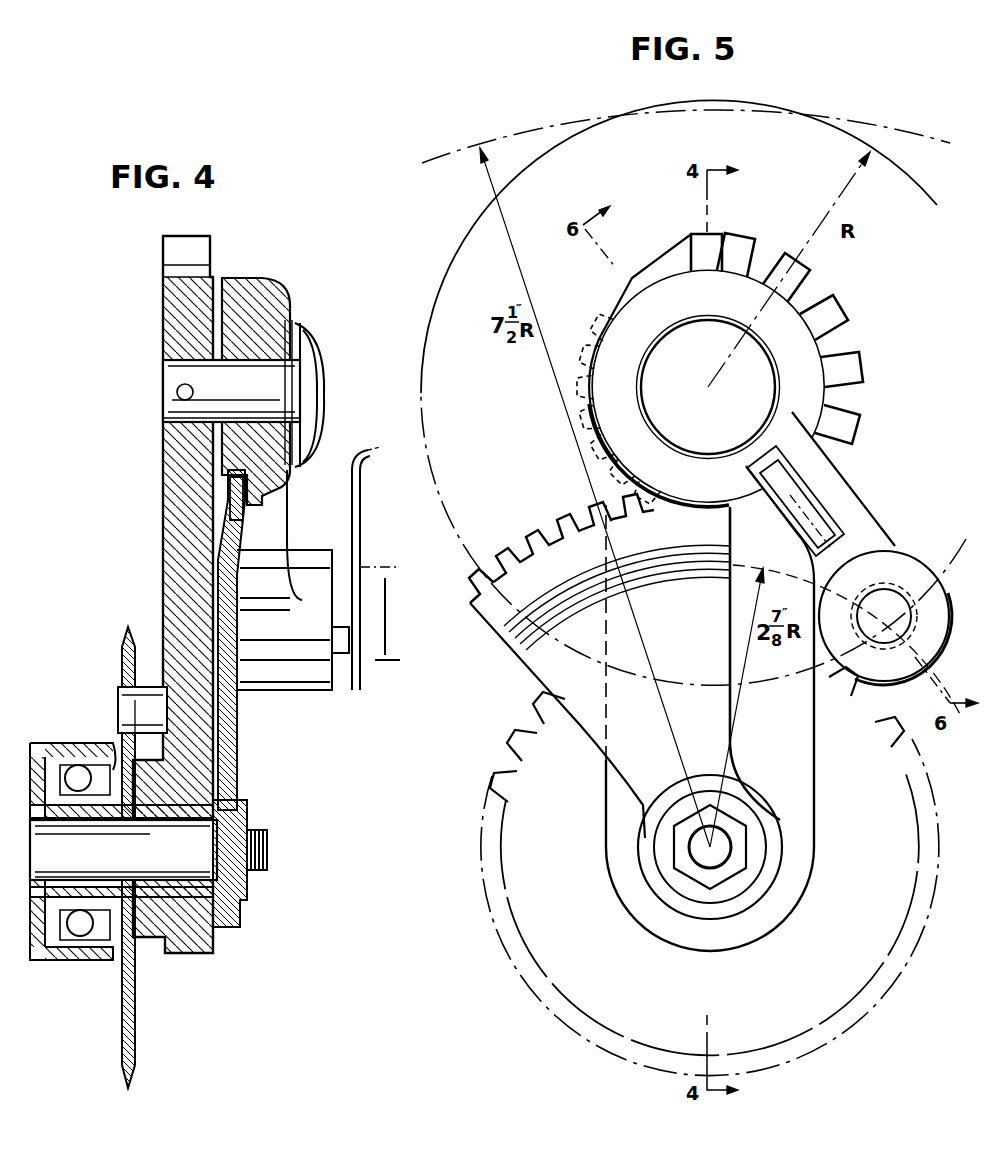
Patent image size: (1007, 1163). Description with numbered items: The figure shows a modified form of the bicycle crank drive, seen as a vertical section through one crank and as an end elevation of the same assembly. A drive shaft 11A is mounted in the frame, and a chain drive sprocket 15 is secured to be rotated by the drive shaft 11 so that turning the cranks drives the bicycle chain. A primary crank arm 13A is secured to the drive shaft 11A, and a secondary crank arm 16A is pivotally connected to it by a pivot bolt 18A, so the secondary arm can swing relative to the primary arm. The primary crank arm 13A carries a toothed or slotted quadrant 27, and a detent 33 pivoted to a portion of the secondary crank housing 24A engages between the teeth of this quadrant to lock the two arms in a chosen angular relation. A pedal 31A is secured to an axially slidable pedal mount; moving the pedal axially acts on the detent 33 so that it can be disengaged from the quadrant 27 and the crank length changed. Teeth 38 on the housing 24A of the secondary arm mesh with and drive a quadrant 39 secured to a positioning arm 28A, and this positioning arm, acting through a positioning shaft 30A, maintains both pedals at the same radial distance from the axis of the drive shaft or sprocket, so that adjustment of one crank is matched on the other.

In FIG. 4, the drive shaft 11 is at (45, 745).
In FIG. 4, the drive shaft 11A is at (52, 897).
In FIG. 4, the primary crank arm 13A is at (163, 521).
In FIG. 5, the primary crank arm 13A is at (810, 769).
In FIG. 4, the chain drive sprocket 15 is at (135, 1013).
In FIG. 4, the secondary crank arm 16A is at (276, 538).
In FIG. 5, the secondary crank arm 16A is at (822, 470).
In FIG. 4, the pivot bolt 18A is at (288, 374).
In FIG. 5, the pivot bolt 18A is at (716, 371).
In FIG. 5, the secondary crank housing 24A is at (603, 350).
In FIG. 5, the toothed or slotted quadrant 27 is at (850, 348).
In FIG. 4, the positioning arm 28A is at (240, 728).
In FIG. 5, the positioning arm 28A is at (727, 725).
In FIG. 4, the positioning shaft 30A is at (195, 832).
In FIG. 4, the pedal 31A is at (388, 670).
In FIG. 5, the detent 33 is at (815, 521).
In FIG. 5, the teeth 38 is at (597, 423).
In FIG. 4, the quadrant 39 is at (237, 490).
In FIG. 5, the quadrant 39 is at (536, 545).